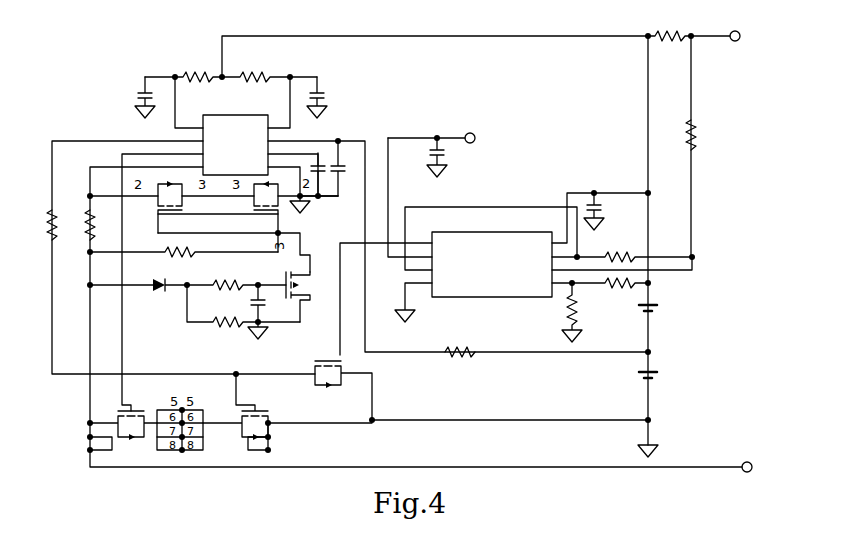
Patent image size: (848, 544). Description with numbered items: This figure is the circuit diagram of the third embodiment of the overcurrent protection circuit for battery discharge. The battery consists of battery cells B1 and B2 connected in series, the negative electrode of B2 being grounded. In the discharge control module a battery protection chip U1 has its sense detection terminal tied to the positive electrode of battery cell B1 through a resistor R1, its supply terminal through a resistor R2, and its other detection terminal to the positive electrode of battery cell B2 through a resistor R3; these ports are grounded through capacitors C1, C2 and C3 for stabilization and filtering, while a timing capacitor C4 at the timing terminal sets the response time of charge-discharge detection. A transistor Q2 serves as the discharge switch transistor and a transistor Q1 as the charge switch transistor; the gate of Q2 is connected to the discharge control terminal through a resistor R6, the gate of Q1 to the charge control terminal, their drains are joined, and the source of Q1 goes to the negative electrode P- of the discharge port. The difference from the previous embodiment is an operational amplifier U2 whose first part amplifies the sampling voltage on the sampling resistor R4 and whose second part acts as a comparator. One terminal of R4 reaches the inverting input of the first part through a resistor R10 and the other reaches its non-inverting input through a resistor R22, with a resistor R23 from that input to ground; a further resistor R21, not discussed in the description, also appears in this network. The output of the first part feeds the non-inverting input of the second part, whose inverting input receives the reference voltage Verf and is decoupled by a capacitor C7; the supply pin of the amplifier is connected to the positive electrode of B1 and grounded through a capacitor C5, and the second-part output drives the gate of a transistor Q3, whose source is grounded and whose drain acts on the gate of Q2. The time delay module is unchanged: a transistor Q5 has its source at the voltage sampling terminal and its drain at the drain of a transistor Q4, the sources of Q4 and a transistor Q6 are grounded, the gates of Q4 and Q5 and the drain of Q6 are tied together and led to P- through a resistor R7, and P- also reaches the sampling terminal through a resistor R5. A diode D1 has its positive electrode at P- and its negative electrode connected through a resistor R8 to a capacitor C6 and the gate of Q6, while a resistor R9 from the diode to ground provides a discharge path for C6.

The battery protection chip U1 is at (411, 214).
The operational amplifier U2 is at (517, 246).
The resistor R1 is at (185, 66).
The resistor R2 is at (269, 66).
The resistor R3 is at (548, 341).
The sampling resistor R4 is at (687, 26).
The resistor R5 is at (99, 225).
The resistor R6 is at (61, 225).
The resistor R7 is at (182, 245).
The resistor R8 is at (235, 275).
The resistor R9 is at (243, 312).
The resistor R10 is at (705, 135).
The resistor R21 is at (634, 244).
The resistor R22 is at (611, 292).
The resistor R23 is at (584, 312).
The capacitor C1 is at (136, 97).
The capacitor C2 is at (324, 97).
The capacitor C3 is at (344, 167).
The timing capacitor C4 is at (324, 175).
The capacitor C5 is at (601, 210).
The capacitor C6 is at (267, 303).
The capacitor C7 is at (426, 156).
The charge switch transistor Q1 is at (163, 412).
The discharge switch transistor Q2 is at (287, 414).
The MOS transistor Q3 is at (471, 378).
The MOS transistor Q4 is at (256, 216).
The MOS transistor Q5 is at (180, 207).
The MOS transistor Q6 is at (306, 294).
The diode D1 is at (140, 272).
The battery cell B1 is at (661, 306).
The battery cell B2 is at (661, 389).
The negative electrode of the discharge port P- is at (749, 462).
The reference voltage Verf is at (475, 134).